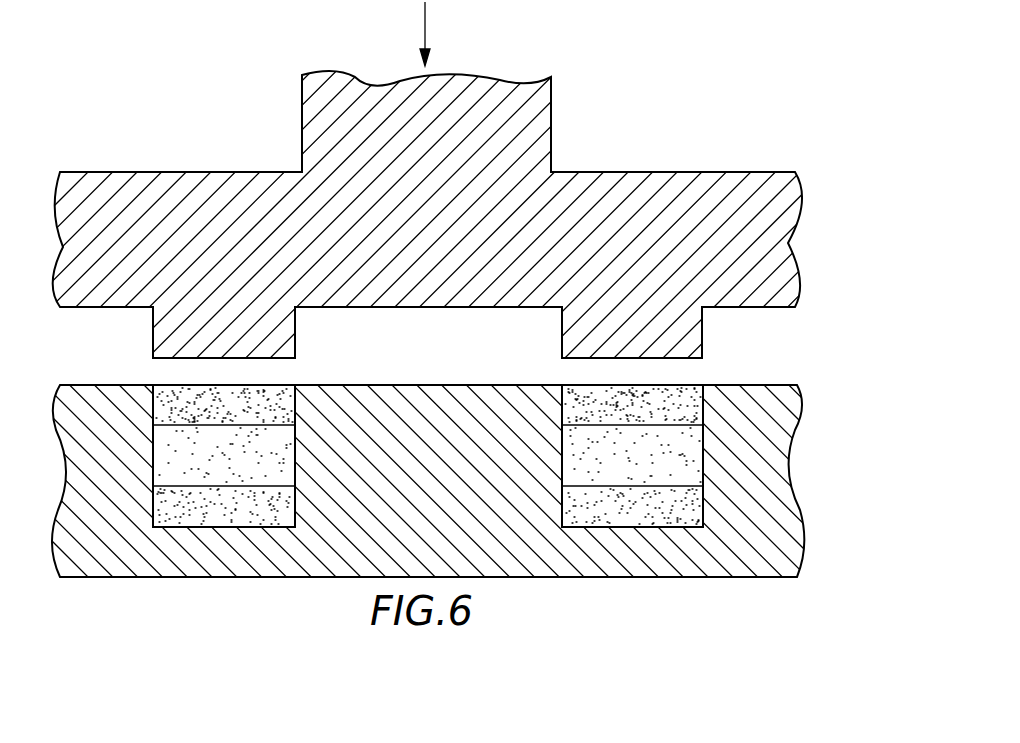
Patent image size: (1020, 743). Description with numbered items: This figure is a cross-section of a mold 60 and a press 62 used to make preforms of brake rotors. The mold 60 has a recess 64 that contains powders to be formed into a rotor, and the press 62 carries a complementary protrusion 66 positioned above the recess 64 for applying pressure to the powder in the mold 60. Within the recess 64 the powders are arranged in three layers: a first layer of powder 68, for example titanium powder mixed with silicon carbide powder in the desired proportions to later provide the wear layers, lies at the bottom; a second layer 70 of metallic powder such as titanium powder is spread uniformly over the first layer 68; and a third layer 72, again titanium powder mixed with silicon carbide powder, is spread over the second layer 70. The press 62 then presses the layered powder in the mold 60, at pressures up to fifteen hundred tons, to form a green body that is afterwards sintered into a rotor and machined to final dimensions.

The mold 60 is at (720, 576).
The press 62 is at (614, 178).
The recess 64 is at (701, 393).
The complementary protrusion 66 is at (703, 336).
The first layer of powder 68 is at (283, 512).
The second layer 70 is at (690, 451).
The third layer 72 is at (690, 408).